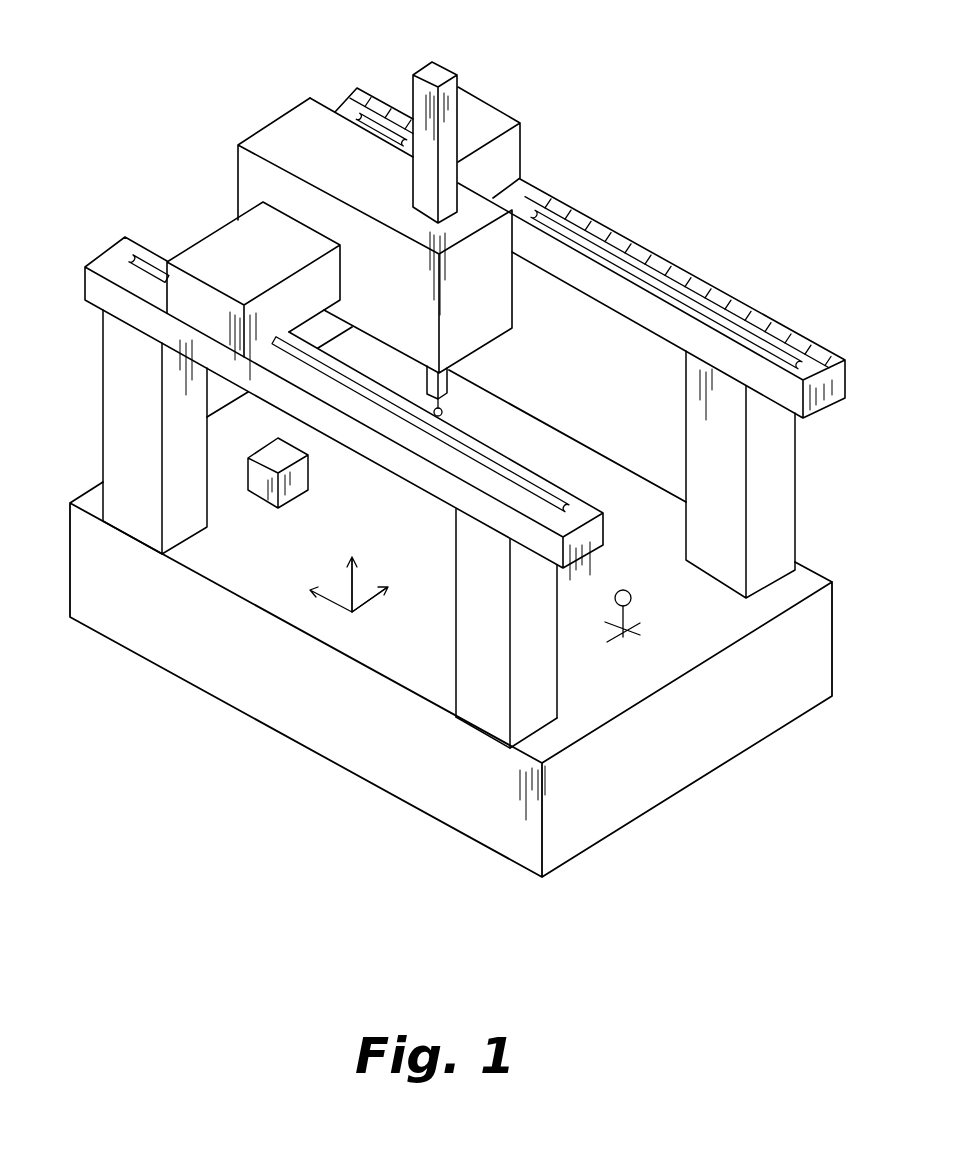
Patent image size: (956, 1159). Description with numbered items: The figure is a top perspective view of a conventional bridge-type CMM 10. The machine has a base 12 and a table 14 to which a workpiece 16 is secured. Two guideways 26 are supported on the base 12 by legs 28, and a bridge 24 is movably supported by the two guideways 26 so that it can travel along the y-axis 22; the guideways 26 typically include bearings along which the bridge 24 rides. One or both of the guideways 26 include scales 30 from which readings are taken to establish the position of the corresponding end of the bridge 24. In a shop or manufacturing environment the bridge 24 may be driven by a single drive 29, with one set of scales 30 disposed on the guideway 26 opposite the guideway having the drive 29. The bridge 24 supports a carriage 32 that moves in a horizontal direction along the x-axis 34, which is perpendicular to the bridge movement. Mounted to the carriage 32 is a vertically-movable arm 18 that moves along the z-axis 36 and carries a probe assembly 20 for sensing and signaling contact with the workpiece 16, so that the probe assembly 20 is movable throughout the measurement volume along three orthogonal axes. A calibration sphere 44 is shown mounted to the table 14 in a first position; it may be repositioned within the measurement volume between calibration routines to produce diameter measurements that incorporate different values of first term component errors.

The bridge-type CMM 10 is at (624, 150).
The base 12 is at (217, 668).
The table 14 is at (427, 658).
The workpiece 16 is at (257, 482).
The arm 18 is at (447, 381).
The probe assembly 20 is at (443, 411).
The y-axis 22 is at (332, 606).
The bridge 24 is at (455, 105).
The guideways 26 is at (120, 262).
The legs 28 is at (114, 400).
The drive 29 is at (193, 303).
The scales 30 is at (680, 277).
The carriage 32 is at (286, 122).
The x-axis 34 is at (365, 603).
The z-axis 36 is at (348, 587).
The calibration sphere 44 is at (624, 588).